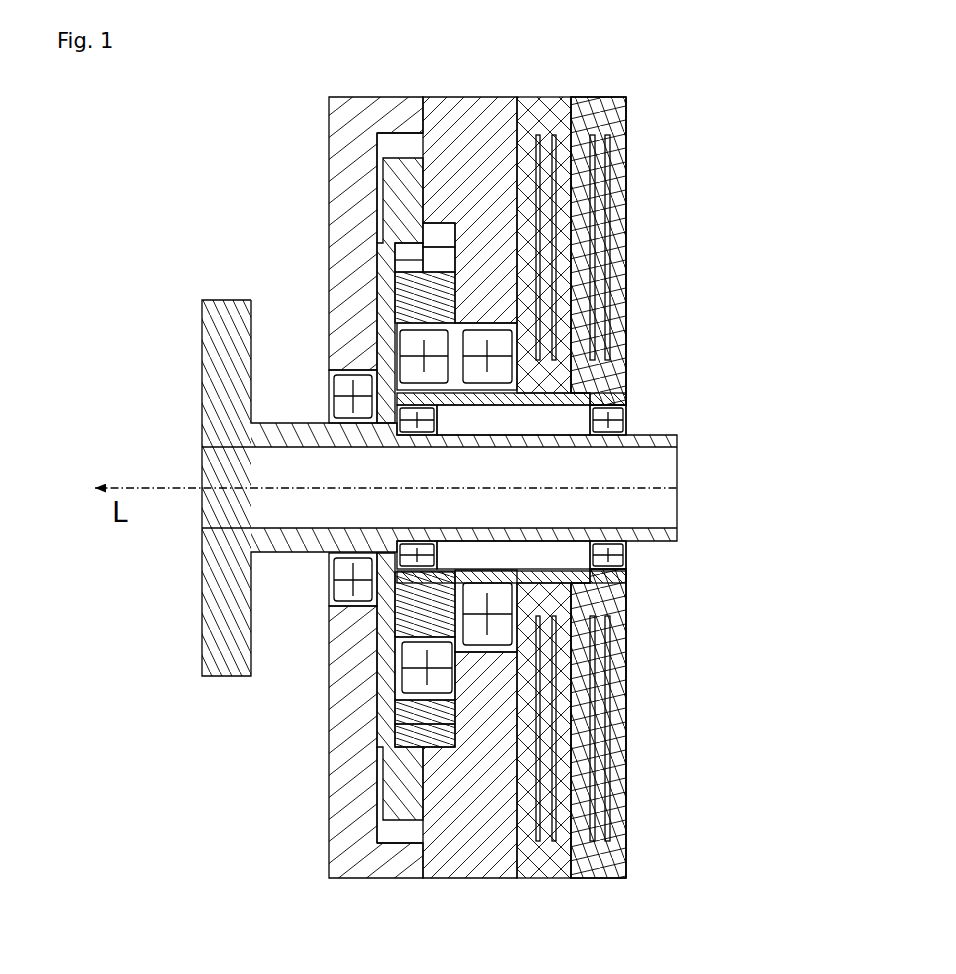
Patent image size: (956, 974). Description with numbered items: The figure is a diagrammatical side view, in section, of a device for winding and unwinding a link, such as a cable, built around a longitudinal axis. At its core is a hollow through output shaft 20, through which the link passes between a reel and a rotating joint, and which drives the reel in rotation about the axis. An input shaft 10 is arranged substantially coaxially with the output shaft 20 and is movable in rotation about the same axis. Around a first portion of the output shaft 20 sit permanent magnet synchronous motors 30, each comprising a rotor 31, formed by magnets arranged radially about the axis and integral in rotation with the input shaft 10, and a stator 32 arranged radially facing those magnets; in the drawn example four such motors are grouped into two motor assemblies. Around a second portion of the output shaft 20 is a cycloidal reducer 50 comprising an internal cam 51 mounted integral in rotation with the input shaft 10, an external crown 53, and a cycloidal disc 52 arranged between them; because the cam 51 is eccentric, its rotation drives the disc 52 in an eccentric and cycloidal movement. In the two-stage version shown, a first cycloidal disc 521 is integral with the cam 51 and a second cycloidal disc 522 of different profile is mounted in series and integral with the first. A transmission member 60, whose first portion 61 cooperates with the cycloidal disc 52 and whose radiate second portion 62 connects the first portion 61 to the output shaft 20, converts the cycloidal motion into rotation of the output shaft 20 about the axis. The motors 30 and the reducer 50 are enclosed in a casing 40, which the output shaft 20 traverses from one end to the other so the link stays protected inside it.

The input shaft 10 is at (548, 397).
The output shaft 20 is at (290, 432).
The permanent magnet synchronous motor 30 is at (643, 143).
The rotor 31 is at (625, 252).
The stator 32 is at (628, 188).
The casing 40 is at (345, 192).
The cycloidal reducer 50 is at (398, 151).
The internal cam 51 is at (398, 617).
The cycloidal disc 52 is at (405, 283).
The external crown 53 is at (471, 827).
The transmission member 60 is at (387, 790).
The first portion 61 is at (432, 222).
The second portion 62 is at (397, 298).
The first cycloidal disc 521 is at (455, 740).
The second cycloidal disc 522 is at (455, 702).